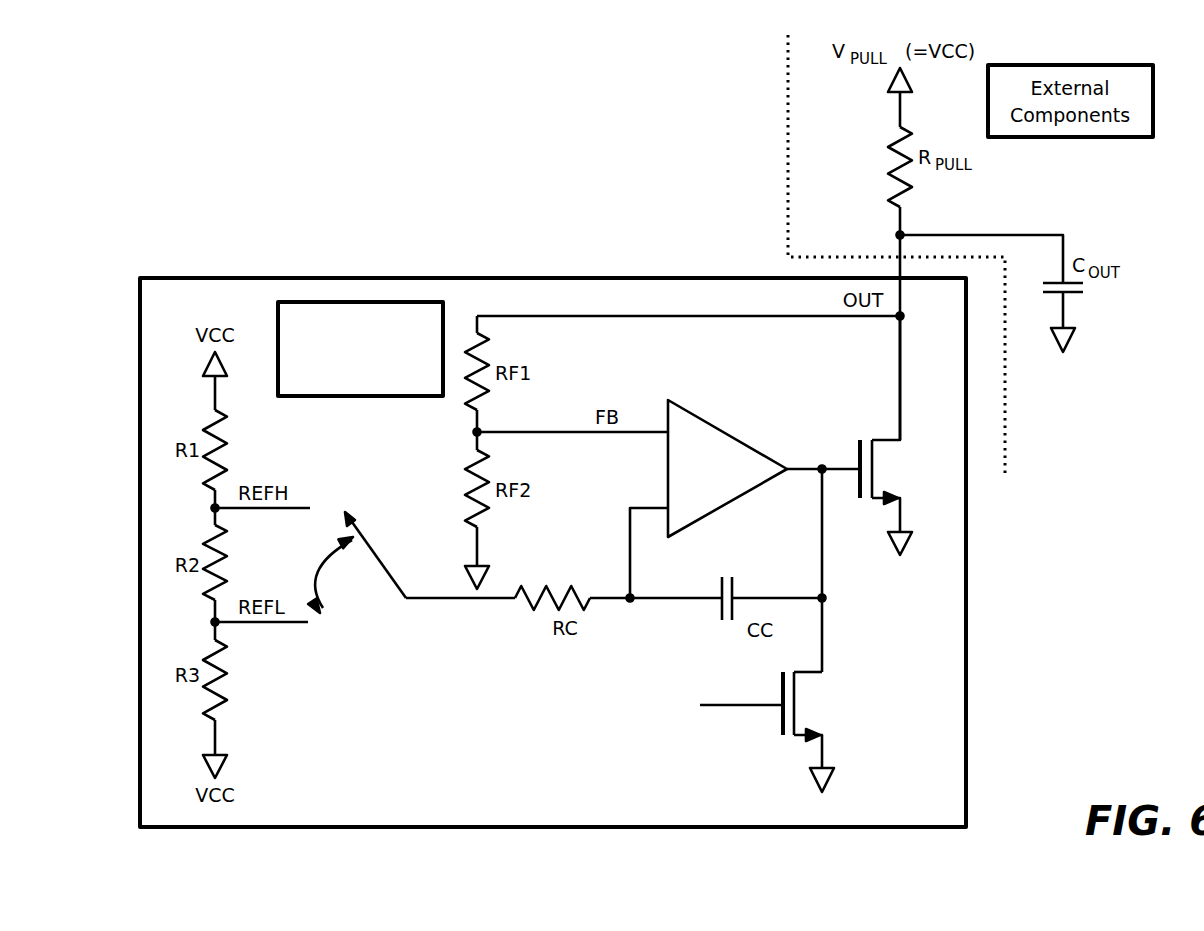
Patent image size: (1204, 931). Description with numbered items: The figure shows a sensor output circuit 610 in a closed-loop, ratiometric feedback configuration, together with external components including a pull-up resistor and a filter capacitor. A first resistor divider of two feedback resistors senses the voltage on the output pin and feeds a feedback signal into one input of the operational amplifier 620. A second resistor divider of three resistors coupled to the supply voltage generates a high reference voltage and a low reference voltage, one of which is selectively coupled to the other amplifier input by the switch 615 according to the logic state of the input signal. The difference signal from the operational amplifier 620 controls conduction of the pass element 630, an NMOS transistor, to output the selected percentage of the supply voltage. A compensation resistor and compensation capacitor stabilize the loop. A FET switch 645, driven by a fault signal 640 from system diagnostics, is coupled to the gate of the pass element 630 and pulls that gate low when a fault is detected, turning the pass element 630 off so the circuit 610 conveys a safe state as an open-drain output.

The sensor output circuit 610 is at (553, 552).
The switch 615 is at (360, 585).
The operational amplifier 620 is at (727, 468).
The pass element 630 is at (890, 435).
The fault signal 640 is at (666, 746).
The switch 645 is at (812, 732).